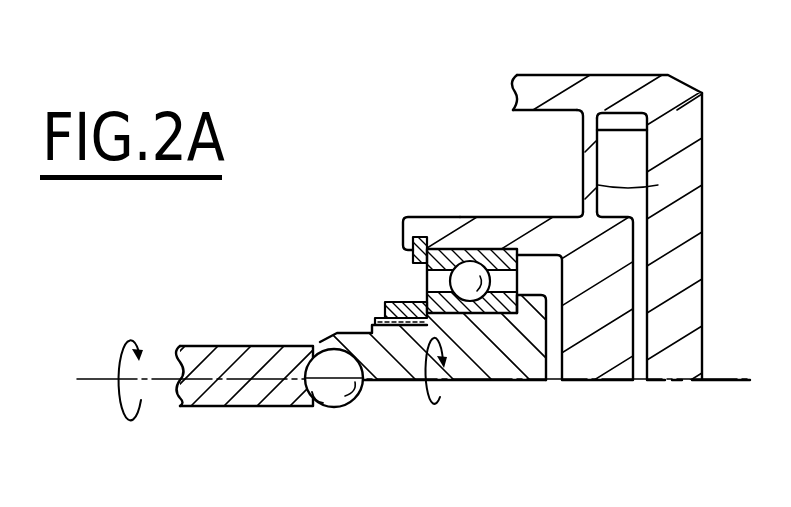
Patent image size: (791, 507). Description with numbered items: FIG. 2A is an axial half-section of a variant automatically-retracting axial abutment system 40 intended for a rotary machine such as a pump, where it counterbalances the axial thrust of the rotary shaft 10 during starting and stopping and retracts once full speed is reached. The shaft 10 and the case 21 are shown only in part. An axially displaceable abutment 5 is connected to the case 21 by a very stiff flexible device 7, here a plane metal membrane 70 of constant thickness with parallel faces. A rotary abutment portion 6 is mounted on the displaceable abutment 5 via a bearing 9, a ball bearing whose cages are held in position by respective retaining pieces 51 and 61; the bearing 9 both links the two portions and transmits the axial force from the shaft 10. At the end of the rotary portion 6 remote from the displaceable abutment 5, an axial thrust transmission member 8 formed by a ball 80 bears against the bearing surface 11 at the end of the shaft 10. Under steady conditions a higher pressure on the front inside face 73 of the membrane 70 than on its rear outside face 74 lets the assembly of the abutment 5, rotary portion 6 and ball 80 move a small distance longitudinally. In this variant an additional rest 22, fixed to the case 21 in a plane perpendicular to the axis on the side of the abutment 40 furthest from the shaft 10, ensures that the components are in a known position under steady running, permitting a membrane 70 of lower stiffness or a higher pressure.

The axially displaceable abutment 5 is at (608, 312).
The rotary abutment portion 6 is at (527, 362).
The flexible device 7 is at (583, 148).
The axial thrust transmission member 8 is at (370, 397).
The bearing 9 is at (497, 305).
The rotary shaft 10 is at (233, 405).
The bearing surface 11 is at (323, 399).
The case 21 is at (537, 78).
The additional rest 22 is at (675, 357).
The axial abutment system 40 is at (396, 206).
The retaining piece 51 is at (410, 257).
The retaining piece 61 is at (390, 300).
The plane metal membrane 70 is at (698, 119).
The front inside face 73 is at (583, 190).
The rear outside face 74 is at (658, 185).
The ball 80 is at (331, 390).